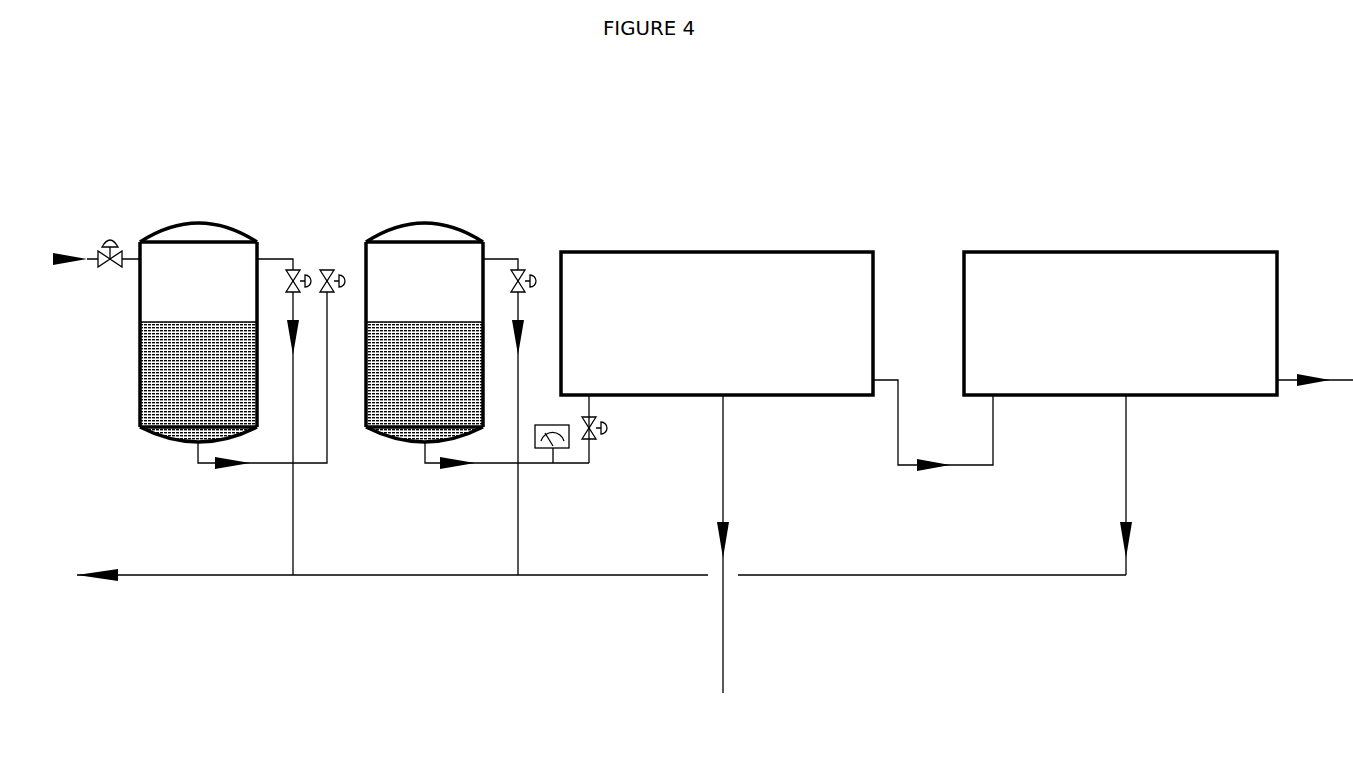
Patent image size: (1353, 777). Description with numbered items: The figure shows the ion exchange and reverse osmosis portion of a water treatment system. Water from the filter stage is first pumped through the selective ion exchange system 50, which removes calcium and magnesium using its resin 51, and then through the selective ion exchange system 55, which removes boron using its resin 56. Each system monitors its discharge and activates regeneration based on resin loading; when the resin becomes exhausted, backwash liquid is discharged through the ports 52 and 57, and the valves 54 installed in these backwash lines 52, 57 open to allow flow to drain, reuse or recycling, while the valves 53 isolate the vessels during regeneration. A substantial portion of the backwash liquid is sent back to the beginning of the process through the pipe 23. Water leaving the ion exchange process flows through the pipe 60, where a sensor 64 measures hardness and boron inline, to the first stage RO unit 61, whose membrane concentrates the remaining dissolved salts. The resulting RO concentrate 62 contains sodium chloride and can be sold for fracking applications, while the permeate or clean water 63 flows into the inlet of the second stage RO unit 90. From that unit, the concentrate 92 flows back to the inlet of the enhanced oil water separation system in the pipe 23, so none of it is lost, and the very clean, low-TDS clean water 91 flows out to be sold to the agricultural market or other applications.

The pipe 23 is at (417, 582).
The selective ion exchange system 50 is at (200, 230).
The resin 51 is at (213, 347).
The port 52 is at (285, 253).
The valve 53 is at (114, 237).
The valve 54 is at (300, 265).
The selective ion exchange system 55 is at (425, 228).
The resin 56 is at (440, 347).
The port 57 is at (497, 253).
The pipe 60 is at (570, 475).
The first stage RO unit 61 is at (667, 273).
The RO concentrate 62 is at (715, 623).
The clean water 63 is at (893, 375).
The sensor 64 is at (551, 422).
The second stage RO unit 90 is at (1070, 273).
The clean water 91 is at (1328, 363).
The concentrate 92 is at (1137, 448).